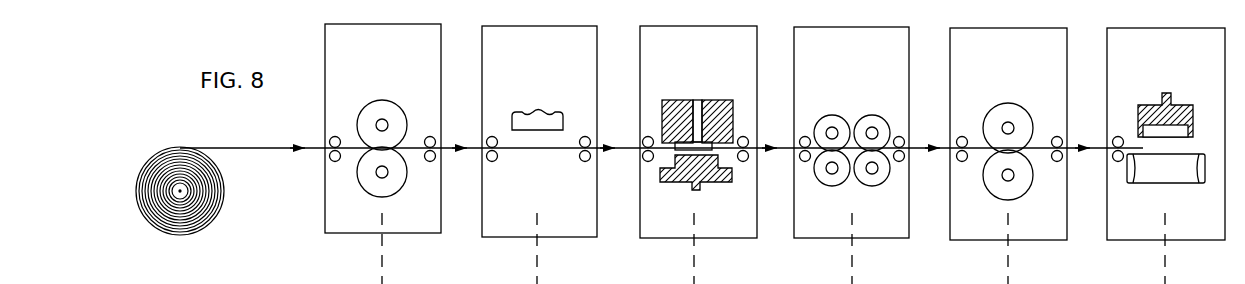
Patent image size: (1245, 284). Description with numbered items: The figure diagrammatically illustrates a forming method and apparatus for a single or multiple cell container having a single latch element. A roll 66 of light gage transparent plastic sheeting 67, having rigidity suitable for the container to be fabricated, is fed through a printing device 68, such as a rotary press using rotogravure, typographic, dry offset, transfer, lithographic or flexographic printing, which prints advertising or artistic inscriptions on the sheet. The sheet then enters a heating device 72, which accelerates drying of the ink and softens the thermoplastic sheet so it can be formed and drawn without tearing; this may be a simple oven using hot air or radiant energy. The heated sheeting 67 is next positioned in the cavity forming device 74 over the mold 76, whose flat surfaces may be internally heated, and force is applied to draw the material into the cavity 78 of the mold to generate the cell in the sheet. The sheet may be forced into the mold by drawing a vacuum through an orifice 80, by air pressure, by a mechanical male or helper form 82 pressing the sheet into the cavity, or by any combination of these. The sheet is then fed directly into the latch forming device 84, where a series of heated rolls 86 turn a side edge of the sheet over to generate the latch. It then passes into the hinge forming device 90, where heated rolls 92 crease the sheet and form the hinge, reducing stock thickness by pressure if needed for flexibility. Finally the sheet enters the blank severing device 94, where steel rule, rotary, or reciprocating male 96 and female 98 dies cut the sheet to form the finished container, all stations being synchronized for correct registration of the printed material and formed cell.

The roll 66 is at (168, 152).
The plastic sheeting 67 is at (281, 150).
The printing device 68 is at (350, 219).
The heating device 72 is at (506, 219).
The cavity forming device 74 is at (697, 155).
The mold 76 is at (677, 152).
The cavity 78 is at (707, 142).
The orifice 80 is at (693, 99).
The male or helper form 82 is at (688, 177).
The latch forming device 84 is at (856, 155).
The heated rolls 86 is at (837, 126).
The hinge forming device 90 is at (997, 156).
The heated rolls 92 is at (993, 132).
The blank severing device 94 is at (1149, 156).
The male die 96 is at (1138, 113).
The female die 98 is at (1143, 152).